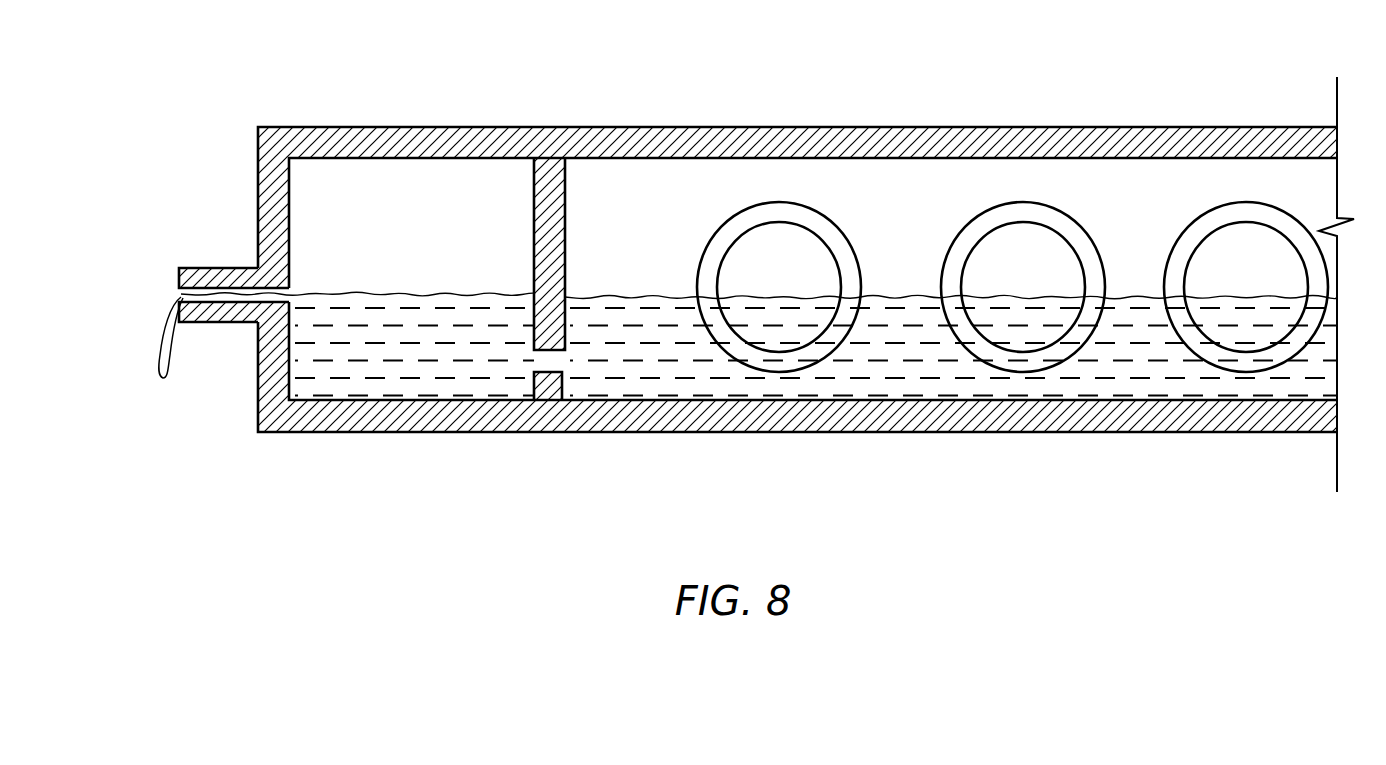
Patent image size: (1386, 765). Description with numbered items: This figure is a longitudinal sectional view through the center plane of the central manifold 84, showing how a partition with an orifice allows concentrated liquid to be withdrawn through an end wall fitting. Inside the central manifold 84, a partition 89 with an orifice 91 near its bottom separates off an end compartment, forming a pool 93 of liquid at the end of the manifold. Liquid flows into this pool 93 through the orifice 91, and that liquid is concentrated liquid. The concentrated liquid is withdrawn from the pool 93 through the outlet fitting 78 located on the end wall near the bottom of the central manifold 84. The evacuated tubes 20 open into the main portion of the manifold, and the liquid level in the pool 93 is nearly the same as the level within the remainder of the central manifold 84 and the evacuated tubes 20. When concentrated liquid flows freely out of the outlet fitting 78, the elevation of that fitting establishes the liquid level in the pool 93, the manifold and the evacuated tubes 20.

The evacuated tube 20 is at (1055, 218).
The outlet fitting 78 is at (202, 268).
The central manifold 84 is at (872, 140).
The partition 89 is at (545, 233).
The orifice 91 is at (552, 358).
The pool 93 is at (403, 352).